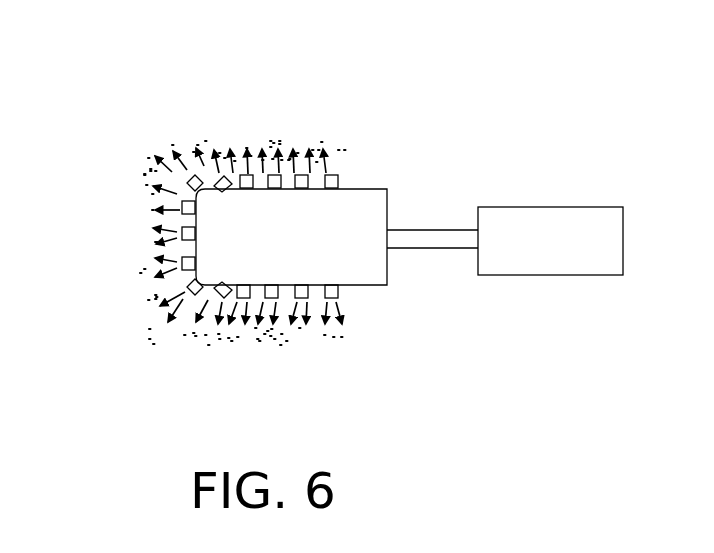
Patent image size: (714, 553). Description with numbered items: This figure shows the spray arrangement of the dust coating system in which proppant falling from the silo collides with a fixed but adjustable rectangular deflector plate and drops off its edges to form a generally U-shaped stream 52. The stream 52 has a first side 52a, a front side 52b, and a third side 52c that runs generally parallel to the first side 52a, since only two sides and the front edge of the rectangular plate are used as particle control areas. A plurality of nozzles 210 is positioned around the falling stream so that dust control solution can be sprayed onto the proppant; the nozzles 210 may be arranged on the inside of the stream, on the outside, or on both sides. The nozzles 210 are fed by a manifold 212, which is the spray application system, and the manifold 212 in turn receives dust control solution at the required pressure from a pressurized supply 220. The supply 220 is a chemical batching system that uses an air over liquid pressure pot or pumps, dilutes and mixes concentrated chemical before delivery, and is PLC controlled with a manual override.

The U-shaped stream 52 is at (220, 128).
The first side 52a is at (280, 135).
The front side 52b is at (147, 230).
The side generally parallel to side S2a 52c is at (223, 338).
The nozzles 210 is at (300, 177).
The manifold 212 is at (378, 187).
The pressurized supply 220 is at (545, 213).